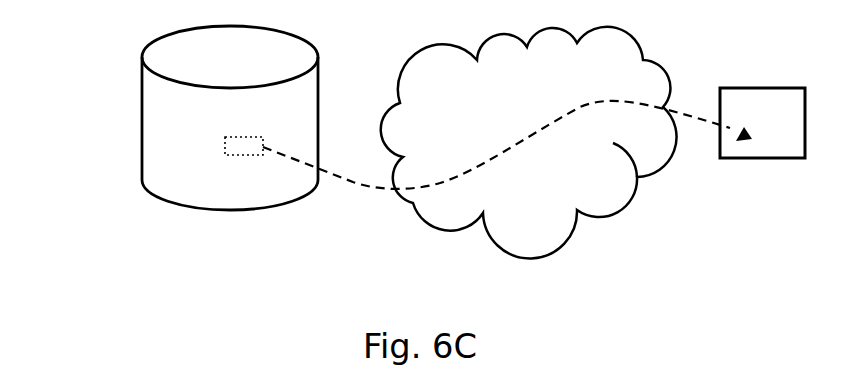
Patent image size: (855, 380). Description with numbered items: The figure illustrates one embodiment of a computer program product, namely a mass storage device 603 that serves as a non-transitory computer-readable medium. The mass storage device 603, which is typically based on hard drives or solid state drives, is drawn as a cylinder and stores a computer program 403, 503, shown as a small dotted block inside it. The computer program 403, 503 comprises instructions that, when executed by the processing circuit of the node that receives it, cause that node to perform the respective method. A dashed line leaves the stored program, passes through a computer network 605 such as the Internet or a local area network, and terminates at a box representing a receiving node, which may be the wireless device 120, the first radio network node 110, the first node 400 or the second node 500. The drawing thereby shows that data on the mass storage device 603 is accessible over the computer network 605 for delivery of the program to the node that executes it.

The mass storage device 603 is at (143, 117).
The computer program 403 is at (232, 198).
The computer program 503 is at (233, 157).
The computer network 605 is at (445, 228).
The wireless device 120 is at (761, 170).
The first radio network node 110 is at (761, 170).
The first node 400 is at (759, 170).
The second node 500 is at (740, 158).